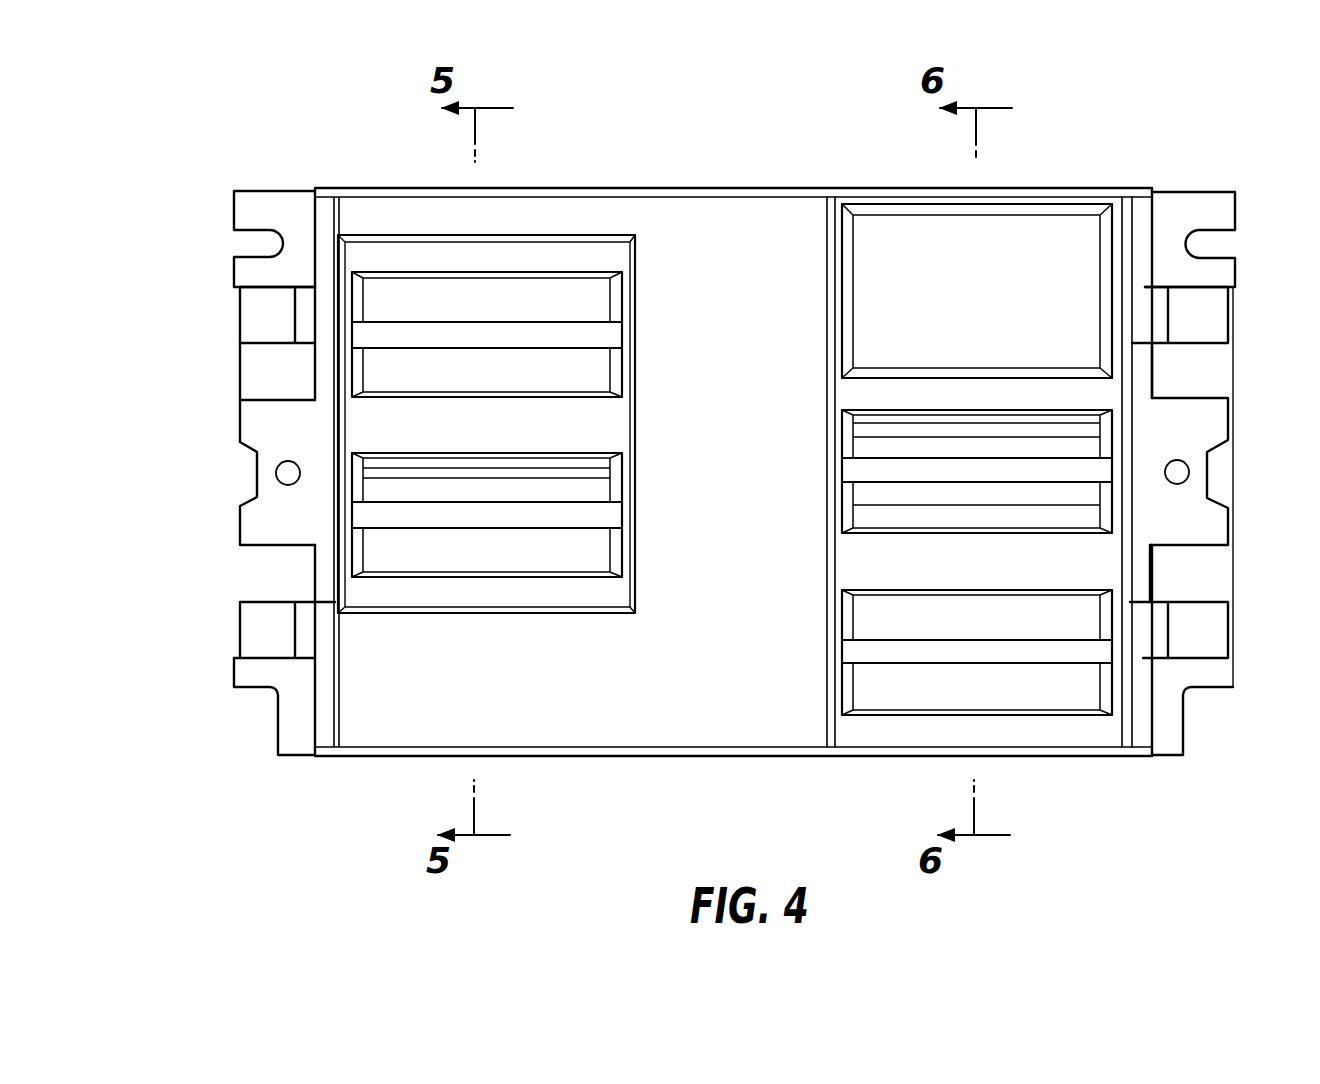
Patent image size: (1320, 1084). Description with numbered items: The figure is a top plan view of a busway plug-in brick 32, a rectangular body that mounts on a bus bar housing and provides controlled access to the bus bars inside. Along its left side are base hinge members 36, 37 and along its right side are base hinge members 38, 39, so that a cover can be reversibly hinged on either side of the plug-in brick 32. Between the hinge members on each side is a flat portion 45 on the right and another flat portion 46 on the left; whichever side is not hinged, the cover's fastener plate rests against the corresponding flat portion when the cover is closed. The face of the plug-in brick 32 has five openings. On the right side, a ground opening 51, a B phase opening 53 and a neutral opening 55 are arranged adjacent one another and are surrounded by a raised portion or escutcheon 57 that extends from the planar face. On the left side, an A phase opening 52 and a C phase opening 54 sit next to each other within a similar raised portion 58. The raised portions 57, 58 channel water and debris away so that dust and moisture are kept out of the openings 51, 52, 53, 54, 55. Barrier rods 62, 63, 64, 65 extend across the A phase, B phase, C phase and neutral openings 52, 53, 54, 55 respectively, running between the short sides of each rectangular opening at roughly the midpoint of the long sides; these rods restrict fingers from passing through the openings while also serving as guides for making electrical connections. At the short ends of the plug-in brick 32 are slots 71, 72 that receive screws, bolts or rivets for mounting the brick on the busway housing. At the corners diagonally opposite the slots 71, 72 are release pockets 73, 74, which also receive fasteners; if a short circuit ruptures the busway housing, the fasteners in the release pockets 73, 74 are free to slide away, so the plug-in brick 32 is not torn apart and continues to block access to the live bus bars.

The plug-in brick 32 is at (748, 154).
The base hinge member 36 is at (255, 318).
The base hinge member 37 is at (250, 632).
The base hinge member 38 is at (1210, 318).
The base hinge member 39 is at (1206, 630).
The flat portion 45 is at (1196, 490).
The flat portion 46 is at (280, 494).
The ground opening 51 is at (938, 212).
The A phase opening 52 is at (588, 280).
The B phase opening 53 is at (866, 422).
The C phase opening 54 is at (600, 462).
The neutral opening 55 is at (872, 595).
The raised portion 57 is at (845, 393).
The raised portion 58 is at (613, 421).
The barrier rod 62 is at (596, 337).
The barrier rod 63 is at (855, 471).
The barrier rod 64 is at (600, 516).
The barrier rod 65 is at (855, 652).
The slot 71 is at (280, 242).
The slot 72 is at (1193, 244).
The release pocket 73 is at (276, 697).
The release pocket 74 is at (1197, 698).